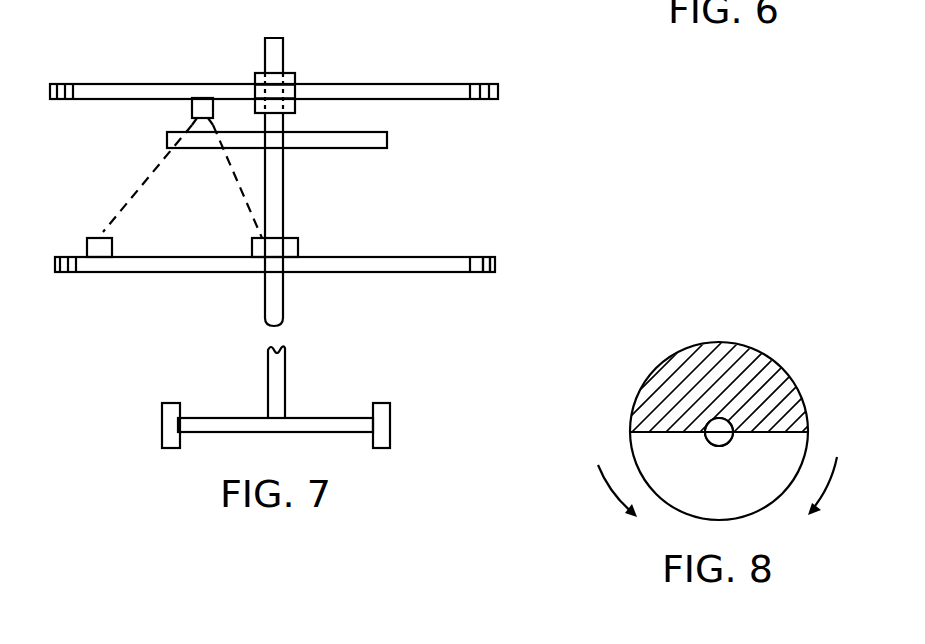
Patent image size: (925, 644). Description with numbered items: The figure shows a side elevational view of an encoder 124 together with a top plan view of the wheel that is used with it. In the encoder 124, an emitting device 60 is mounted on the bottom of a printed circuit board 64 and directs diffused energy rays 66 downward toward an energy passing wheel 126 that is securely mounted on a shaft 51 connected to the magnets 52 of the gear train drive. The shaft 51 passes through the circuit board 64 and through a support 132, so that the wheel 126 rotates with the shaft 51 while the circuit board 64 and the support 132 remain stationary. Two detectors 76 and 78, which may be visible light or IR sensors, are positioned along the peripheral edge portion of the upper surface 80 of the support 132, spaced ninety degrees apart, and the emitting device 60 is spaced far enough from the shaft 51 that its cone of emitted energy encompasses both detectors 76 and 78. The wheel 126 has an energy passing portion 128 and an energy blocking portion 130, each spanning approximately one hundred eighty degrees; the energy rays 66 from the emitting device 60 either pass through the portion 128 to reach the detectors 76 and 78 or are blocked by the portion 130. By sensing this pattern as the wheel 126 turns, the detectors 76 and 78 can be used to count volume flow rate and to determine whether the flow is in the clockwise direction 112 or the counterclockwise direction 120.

In FIG. 7, the shaft 51 is at (284, 308).
In FIG. 7, the magnets 52 is at (162, 418).
In FIG. 7, the emitting device 60 is at (192, 112).
In FIG. 7, the printed circuit board 64 is at (440, 72).
In FIG. 7, the energy rays 66 is at (147, 180).
In FIG. 7, the detector 76 is at (85, 239).
In FIG. 7, the detector 78 is at (298, 240).
In FIG. 7, the upper surface 80 is at (472, 257).
In FIG. 8, the clockwise direction 112 is at (827, 487).
In FIG. 8, the counterclockwise direction 120 is at (610, 487).
In FIG. 7, the encoder 124 is at (540, 31).
In FIG. 7, the energy passing wheel 126 is at (388, 140).
In FIG. 8, the energy passing wheel 126 is at (678, 336).
In FIG. 8, the energy passing portion 128 is at (817, 438).
In FIG. 8, the energy blocking portion 130 is at (777, 358).
In FIG. 7, the support 132 is at (496, 262).